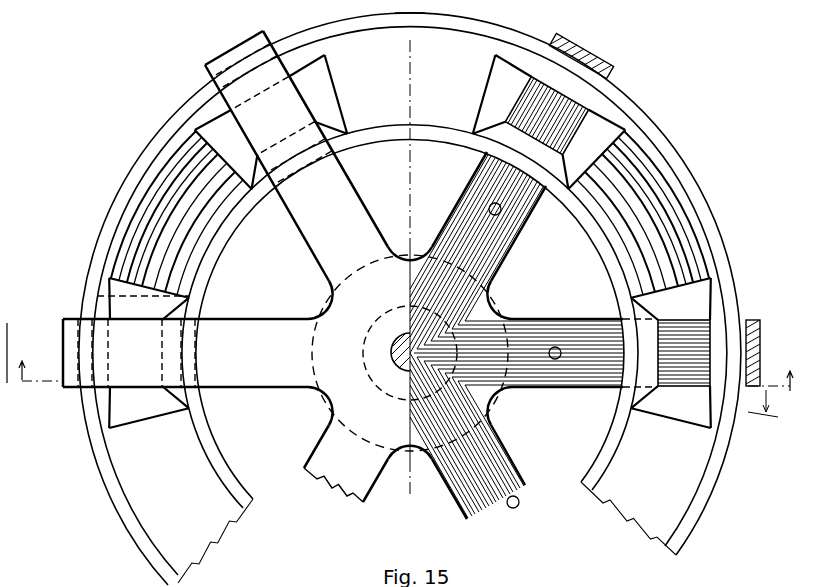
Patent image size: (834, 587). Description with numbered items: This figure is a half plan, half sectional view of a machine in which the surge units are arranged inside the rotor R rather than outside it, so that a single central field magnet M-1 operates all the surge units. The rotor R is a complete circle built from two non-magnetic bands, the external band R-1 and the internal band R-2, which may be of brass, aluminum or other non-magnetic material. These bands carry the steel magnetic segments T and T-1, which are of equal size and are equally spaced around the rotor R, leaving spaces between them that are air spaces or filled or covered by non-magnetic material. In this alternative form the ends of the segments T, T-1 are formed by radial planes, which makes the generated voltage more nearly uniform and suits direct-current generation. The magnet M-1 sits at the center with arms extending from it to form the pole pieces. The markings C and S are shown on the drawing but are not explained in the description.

The external band R-1 is at (366, 29).
The internal band R-2 is at (361, 144).
The magnetic segment T is at (288, 12).
The magnetic segment T-1 is at (638, 73).
The central field magnet M-1 is at (505, 308).
The section line C- C is at (400, 357).
The rotor R is at (711, 492).
The stator S is at (386, 12).